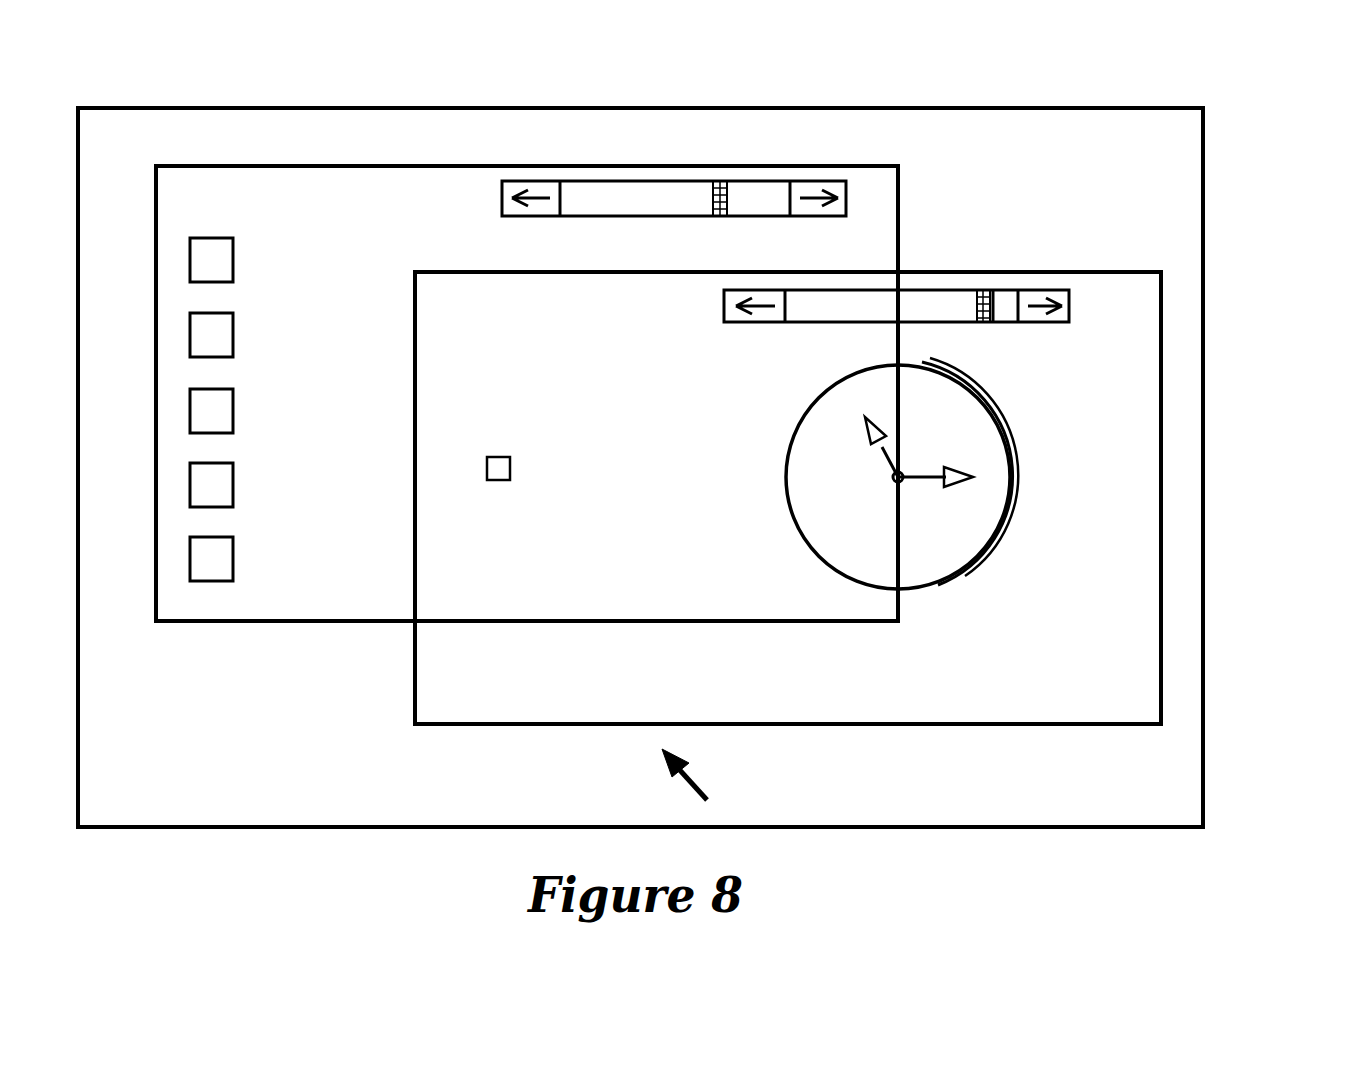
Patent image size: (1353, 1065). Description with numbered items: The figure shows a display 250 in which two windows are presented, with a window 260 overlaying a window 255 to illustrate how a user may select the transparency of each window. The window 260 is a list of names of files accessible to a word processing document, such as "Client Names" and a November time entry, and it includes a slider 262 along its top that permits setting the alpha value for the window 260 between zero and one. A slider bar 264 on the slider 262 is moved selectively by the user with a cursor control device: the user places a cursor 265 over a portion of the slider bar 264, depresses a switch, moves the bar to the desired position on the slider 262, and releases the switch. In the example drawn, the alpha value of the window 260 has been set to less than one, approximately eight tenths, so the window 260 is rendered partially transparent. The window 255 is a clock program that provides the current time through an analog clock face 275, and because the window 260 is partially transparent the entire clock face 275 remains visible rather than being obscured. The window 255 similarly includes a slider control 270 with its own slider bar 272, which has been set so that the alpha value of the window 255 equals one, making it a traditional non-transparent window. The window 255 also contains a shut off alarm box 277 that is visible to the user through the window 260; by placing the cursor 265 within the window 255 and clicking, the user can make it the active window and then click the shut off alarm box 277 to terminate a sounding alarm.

The display 250 is at (1207, 563).
The window 255 is at (1044, 726).
The window 260 is at (320, 622).
The slider 262 is at (602, 180).
The slider bar 264 is at (738, 198).
The cursor 265 is at (698, 777).
The slider control 270 is at (942, 290).
The slider bar 272 is at (1007, 287).
The clock face 275 is at (970, 577).
The shut off alarm box 277 is at (500, 482).